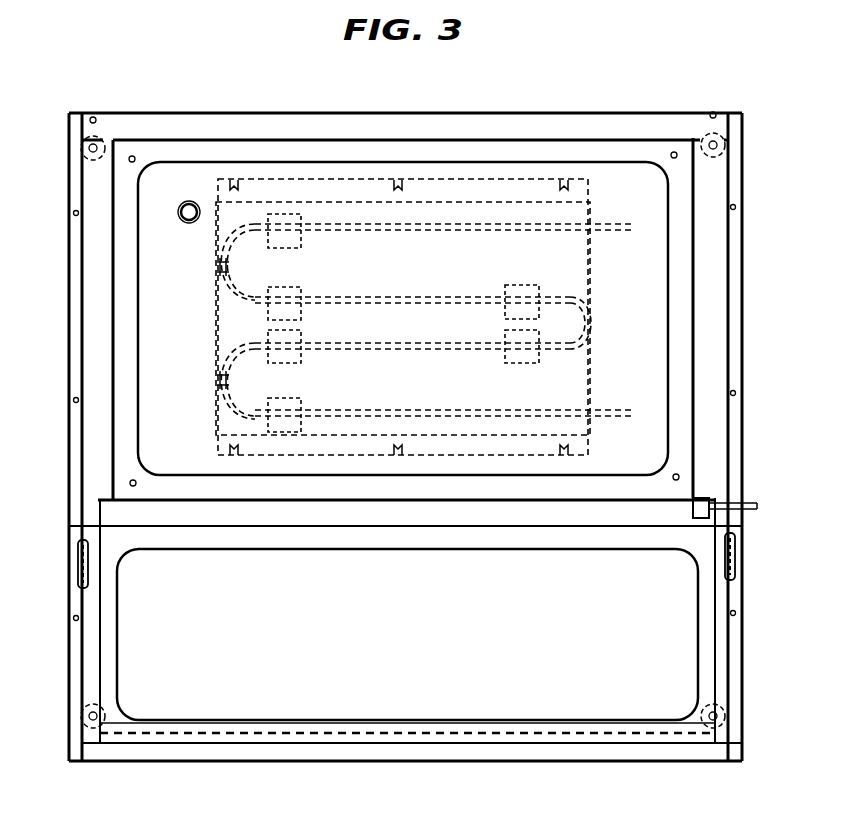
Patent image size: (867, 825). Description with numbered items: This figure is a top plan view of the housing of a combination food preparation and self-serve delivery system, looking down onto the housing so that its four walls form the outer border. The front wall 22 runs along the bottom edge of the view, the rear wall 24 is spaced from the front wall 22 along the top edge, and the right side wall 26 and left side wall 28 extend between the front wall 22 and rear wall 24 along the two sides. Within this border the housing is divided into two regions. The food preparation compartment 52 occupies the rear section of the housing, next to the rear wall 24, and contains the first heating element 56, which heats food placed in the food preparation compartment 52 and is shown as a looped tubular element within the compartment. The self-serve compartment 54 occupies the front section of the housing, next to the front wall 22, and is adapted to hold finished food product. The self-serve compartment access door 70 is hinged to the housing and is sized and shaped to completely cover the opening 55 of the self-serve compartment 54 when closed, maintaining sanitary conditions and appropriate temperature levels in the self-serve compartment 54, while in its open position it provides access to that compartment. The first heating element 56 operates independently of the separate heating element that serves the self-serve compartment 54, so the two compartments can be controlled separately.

The front wall 22 is at (333, 762).
The rear wall 24 is at (362, 112).
The right side wall 26 is at (746, 415).
The left side wall 28 is at (69, 462).
The food preparation compartment 52 is at (192, 325).
The self-serve compartment 54 is at (405, 627).
The opening 55 is at (577, 718).
The first heating element 56 is at (423, 296).
The self-serve compartment access door 70 is at (100, 647).